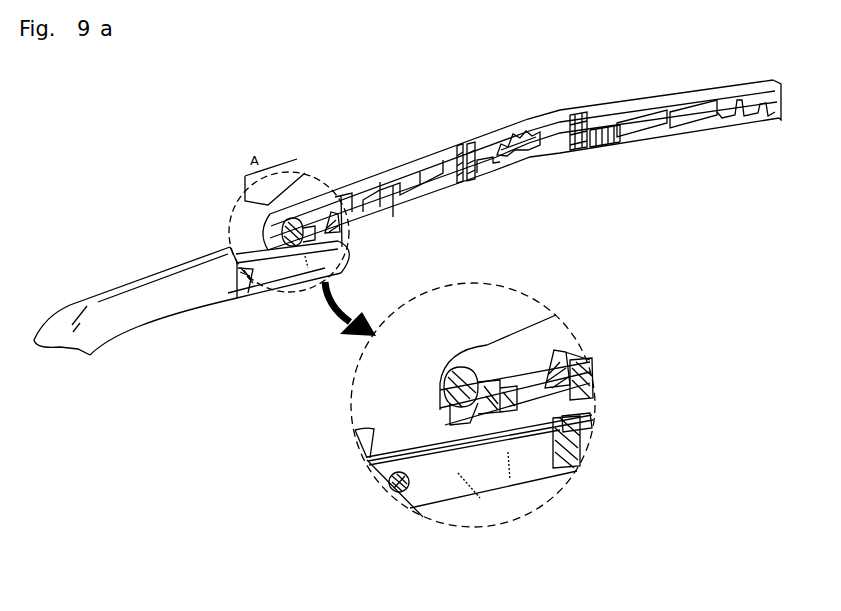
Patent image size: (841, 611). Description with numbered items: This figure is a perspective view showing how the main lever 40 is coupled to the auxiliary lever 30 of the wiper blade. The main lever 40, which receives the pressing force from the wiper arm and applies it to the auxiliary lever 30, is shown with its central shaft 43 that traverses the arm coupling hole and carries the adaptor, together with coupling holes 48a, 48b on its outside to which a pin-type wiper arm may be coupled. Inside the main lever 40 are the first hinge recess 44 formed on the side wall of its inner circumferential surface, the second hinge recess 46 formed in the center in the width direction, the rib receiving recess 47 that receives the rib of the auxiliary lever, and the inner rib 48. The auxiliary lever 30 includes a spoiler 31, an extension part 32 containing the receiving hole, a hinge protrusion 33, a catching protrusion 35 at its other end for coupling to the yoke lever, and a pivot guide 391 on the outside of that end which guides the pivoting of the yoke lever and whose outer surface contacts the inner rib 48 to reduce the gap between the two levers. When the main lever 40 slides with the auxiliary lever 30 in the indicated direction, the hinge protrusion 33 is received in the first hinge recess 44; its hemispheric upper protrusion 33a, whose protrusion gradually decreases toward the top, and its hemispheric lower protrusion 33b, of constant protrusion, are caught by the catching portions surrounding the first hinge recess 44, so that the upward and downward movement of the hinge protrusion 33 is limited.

The auxiliary lever 30 is at (119, 273).
The spoiler 31 is at (88, 323).
The extension part 32 is at (477, 490).
The hinge protrusion 33 is at (237, 293).
The upper protrusion 33a is at (370, 462).
The lower protrusion 33b is at (392, 492).
The catching protrusion 35 is at (578, 450).
The pivot guide 391 is at (593, 421).
The main lever 40 is at (592, 106).
The central shaft 43 is at (528, 135).
The first hinge recess 44 is at (440, 383).
The second hinge recess 46 is at (593, 397).
The rib receiving recess 47 is at (590, 360).
The inner rib 48 is at (393, 217).
The coupling hole 48a is at (508, 152).
The coupling hole 48b is at (545, 148).